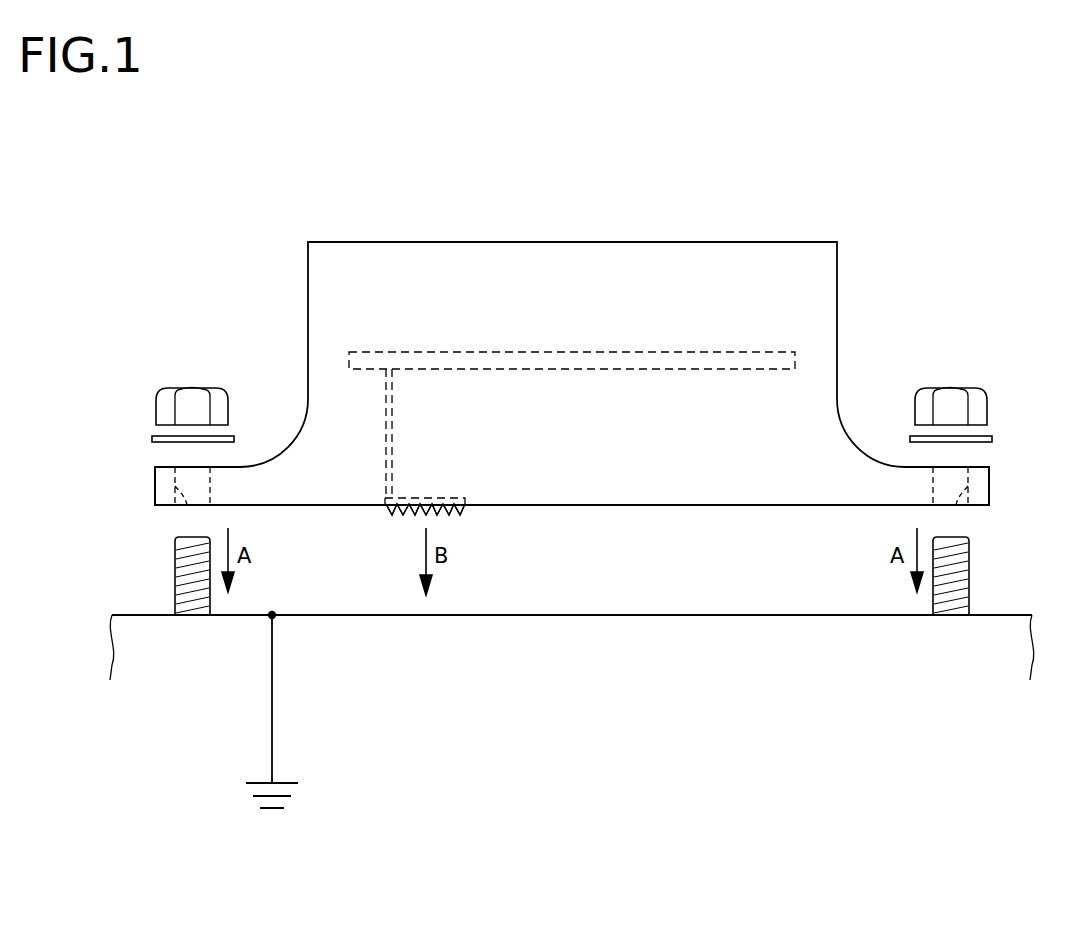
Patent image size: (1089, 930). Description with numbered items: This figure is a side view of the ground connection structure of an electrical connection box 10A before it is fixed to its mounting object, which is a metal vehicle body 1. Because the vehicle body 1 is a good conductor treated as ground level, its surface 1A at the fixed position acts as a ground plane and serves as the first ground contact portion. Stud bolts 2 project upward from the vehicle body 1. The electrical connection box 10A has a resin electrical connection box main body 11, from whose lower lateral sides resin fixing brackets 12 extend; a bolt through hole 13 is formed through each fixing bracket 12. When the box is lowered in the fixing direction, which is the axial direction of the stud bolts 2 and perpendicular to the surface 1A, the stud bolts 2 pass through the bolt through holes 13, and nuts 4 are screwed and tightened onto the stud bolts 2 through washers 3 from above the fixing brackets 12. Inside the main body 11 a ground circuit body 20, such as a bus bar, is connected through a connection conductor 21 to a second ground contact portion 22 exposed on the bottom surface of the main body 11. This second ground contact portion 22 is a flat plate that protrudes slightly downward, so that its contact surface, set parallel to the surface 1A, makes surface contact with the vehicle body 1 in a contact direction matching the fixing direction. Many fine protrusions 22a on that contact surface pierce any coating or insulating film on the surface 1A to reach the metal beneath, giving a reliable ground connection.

The vehicle body 1 is at (716, 650).
The surface of the vehicle body 1A is at (572, 614).
The stud bolt 2 is at (174, 567).
The washer 3 is at (152, 438).
The nut 4 is at (156, 404).
The electrical connection box 10A is at (777, 241).
The electrical connection box main body 11 is at (720, 262).
The fixing bracket 12 is at (155, 478).
The bolt through hole 13 is at (187, 505).
The ground circuit body 20 is at (612, 353).
The connection conductor 21 is at (392, 436).
The second ground contact portion 22 is at (465, 516).
The fine protrusion 22a is at (410, 516).